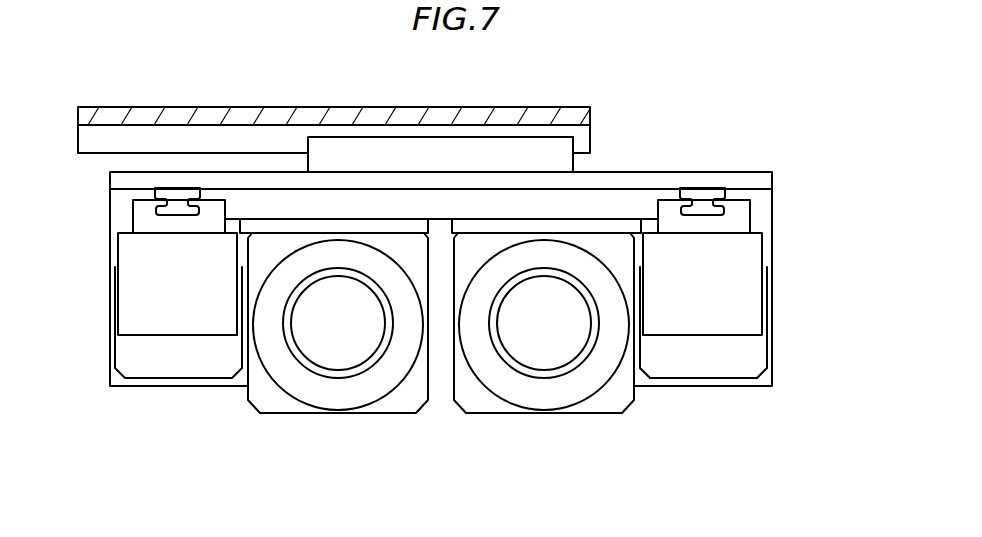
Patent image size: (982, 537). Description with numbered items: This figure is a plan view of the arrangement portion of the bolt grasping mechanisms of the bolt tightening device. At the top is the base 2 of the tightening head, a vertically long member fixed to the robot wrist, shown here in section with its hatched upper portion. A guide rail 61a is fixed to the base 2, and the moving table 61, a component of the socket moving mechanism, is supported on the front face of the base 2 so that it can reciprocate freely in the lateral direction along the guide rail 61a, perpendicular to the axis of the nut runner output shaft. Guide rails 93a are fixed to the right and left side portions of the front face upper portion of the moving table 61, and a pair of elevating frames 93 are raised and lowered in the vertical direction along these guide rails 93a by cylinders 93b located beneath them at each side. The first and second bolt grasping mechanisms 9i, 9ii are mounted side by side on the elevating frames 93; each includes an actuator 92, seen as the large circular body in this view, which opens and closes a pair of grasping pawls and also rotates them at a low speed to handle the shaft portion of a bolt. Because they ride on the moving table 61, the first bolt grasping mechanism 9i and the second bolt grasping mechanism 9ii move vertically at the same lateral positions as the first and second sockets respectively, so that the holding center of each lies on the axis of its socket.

The base 2 is at (326, 137).
The moving table 61 is at (629, 171).
The guide rail 61a is at (88, 155).
The elevating frame 93 is at (387, 218).
The guide rail 93a is at (168, 201).
The cylinder 93b is at (180, 388).
The actuator 92 is at (390, 414).
The first bolt grasping mechanism 9i is at (331, 422).
The second bolt grasping mechanism 9ii is at (559, 422).